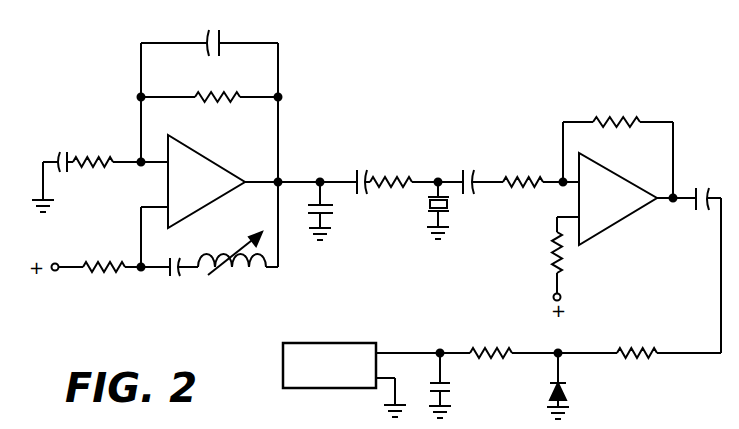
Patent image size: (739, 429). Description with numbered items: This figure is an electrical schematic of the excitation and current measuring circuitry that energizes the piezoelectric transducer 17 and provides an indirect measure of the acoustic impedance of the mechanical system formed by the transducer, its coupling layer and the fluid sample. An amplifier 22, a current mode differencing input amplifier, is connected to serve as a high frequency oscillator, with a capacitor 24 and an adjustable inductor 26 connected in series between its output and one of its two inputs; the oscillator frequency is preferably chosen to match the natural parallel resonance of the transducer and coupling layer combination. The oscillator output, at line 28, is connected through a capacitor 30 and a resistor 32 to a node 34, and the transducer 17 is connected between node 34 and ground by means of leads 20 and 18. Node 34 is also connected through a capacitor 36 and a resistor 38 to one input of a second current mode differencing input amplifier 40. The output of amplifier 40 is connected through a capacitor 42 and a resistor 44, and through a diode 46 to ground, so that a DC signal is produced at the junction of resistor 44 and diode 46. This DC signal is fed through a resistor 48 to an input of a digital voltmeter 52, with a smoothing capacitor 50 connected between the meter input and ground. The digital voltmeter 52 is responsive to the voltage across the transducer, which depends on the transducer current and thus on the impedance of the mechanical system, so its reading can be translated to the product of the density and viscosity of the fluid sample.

The piezoelectric transducer 17 is at (428, 212).
The lead 18 is at (451, 214).
The lead 20 is at (426, 196).
The amplifier 22 is at (189, 149).
The capacitor 24 is at (152, 277).
The adjustable inductor 26 is at (238, 270).
The line 28 is at (302, 175).
The capacitor 30 is at (359, 168).
The resistor 32 is at (412, 182).
The node 34 is at (439, 179).
The capacitor 36 is at (468, 168).
The resistor 38 is at (506, 180).
The second current mode differencing input amplifier 40 is at (590, 197).
The capacitor 42 is at (696, 206).
The resistor 44 is at (670, 325).
The diode 46 is at (566, 392).
The resistor 48 is at (517, 322).
The smoothing capacitor 50 is at (470, 372).
The digital voltmeter 52 is at (357, 343).